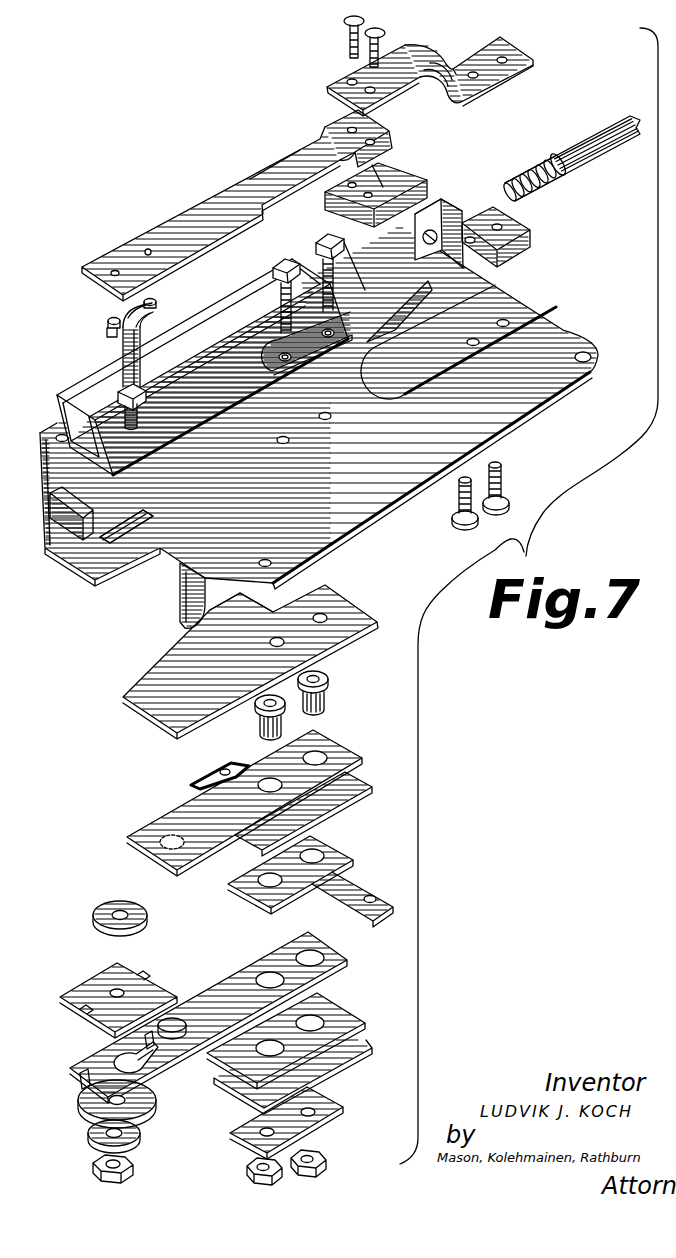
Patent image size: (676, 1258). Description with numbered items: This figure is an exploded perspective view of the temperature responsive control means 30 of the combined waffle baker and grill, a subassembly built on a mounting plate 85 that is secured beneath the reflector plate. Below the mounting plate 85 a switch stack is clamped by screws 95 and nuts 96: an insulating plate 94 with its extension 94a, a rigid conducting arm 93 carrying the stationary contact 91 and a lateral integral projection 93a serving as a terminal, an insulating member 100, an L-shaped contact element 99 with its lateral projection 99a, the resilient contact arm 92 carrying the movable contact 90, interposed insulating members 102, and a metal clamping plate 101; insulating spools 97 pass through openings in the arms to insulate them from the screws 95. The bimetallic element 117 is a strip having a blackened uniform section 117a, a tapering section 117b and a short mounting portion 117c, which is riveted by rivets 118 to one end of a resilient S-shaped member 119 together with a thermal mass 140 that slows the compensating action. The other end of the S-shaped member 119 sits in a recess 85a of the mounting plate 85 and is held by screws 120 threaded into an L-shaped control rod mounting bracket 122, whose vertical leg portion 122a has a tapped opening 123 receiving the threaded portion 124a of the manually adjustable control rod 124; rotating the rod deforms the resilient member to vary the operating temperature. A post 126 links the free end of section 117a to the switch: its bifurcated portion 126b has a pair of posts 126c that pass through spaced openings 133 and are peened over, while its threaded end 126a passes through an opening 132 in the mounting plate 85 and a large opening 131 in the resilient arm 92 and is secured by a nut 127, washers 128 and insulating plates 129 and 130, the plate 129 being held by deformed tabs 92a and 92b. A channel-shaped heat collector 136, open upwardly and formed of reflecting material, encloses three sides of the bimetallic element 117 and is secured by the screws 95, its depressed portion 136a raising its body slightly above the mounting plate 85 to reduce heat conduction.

The temperature responsive control means 30 is at (113, 636).
The mounting plate 85 is at (573, 341).
The recess 85a is at (520, 316).
The movable contact 90 is at (172, 1018).
The stationary contact 91 is at (160, 855).
The resilient contact arm 92 is at (228, 987).
The projecting tab 92a is at (85, 1060).
The projecting tab 92b is at (150, 1068).
The rigid conducting arm 93 is at (312, 747).
The lateral integral projection 93a is at (203, 784).
The insulating plate 94 is at (355, 612).
The extension 94a is at (227, 620).
The screws 95 is at (323, 238).
The nuts 96 is at (282, 1180).
The insulating spools 97 is at (331, 681).
The contact element 99 is at (335, 857).
The lateral projection 99a is at (388, 892).
The insulating member 100 is at (365, 782).
The metal clamping plate 101 is at (322, 1103).
The insulating members 102 is at (372, 1042).
The bimetallic element 117 is at (200, 202).
The uniform cross section portion 117a is at (148, 248).
The tapering section 117b is at (277, 170).
The mounting portion 117c is at (388, 129).
The rivets 118 is at (383, 32).
The resilient S-shaped member 119 is at (413, 66).
The screws 120 is at (496, 513).
The L-shaped control rod mounting bracket 122 is at (527, 237).
The leg portion 122a is at (432, 205).
The tapped opening 123 is at (423, 237).
The control rod 124 is at (583, 171).
The threaded portion 124a is at (537, 163).
The post 126 is at (120, 352).
The threaded end 126a is at (147, 410).
The bifurcated portion 126b is at (155, 313).
The posts 126c is at (110, 318).
The nut 127 is at (130, 1162).
The washers 128 is at (103, 907).
The insulating plate 129 is at (88, 984).
The insulating washer 130 is at (78, 1106).
The opening 131 is at (140, 1073).
The opening 132 is at (135, 542).
The spaced openings 133 is at (118, 265).
The channel-shaped heat collector 136 is at (85, 382).
The depressed portion 136a is at (306, 345).
The thermal mass 140 is at (405, 176).